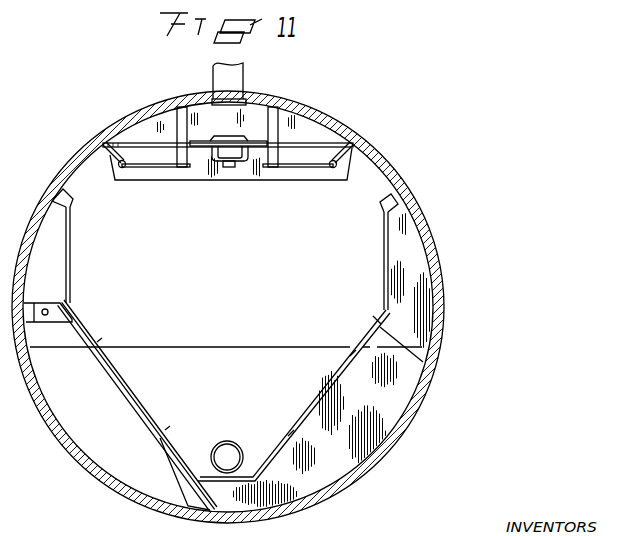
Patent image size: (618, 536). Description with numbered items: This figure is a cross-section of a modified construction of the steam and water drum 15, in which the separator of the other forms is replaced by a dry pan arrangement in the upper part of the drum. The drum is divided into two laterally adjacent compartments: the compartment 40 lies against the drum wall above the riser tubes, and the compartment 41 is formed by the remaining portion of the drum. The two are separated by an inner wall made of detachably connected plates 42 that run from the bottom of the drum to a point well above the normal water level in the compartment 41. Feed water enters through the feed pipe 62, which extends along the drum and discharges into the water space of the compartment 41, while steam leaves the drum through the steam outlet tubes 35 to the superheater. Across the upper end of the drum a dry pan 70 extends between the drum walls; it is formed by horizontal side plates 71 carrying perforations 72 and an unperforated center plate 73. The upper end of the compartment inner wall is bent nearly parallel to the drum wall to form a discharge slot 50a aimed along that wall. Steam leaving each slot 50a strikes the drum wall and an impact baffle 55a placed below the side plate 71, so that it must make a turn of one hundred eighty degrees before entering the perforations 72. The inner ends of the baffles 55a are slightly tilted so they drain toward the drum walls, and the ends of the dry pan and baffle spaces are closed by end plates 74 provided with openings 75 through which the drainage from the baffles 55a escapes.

The steam and water drum 15 is at (410, 206).
The steam outlet tubes 35 is at (214, 74).
The compartment 40 is at (107, 423).
The compartment 41 is at (231, 394).
The plates 42 is at (118, 375).
The discharge slot 50a is at (62, 195).
The impact baffle 55a is at (141, 167).
The feed pipe 62 is at (236, 445).
The dry pan 70 is at (197, 150).
The horizontal side plates 71 is at (167, 143).
The perforations 72 is at (118, 143).
The center plate 73 is at (258, 143).
The end plates 74 is at (247, 181).
The openings 75 is at (118, 157).